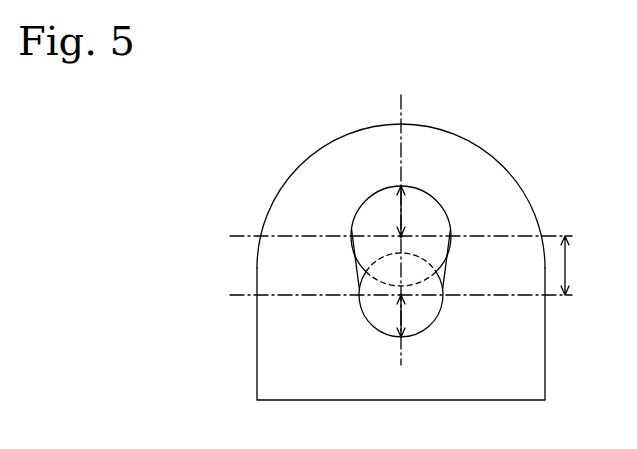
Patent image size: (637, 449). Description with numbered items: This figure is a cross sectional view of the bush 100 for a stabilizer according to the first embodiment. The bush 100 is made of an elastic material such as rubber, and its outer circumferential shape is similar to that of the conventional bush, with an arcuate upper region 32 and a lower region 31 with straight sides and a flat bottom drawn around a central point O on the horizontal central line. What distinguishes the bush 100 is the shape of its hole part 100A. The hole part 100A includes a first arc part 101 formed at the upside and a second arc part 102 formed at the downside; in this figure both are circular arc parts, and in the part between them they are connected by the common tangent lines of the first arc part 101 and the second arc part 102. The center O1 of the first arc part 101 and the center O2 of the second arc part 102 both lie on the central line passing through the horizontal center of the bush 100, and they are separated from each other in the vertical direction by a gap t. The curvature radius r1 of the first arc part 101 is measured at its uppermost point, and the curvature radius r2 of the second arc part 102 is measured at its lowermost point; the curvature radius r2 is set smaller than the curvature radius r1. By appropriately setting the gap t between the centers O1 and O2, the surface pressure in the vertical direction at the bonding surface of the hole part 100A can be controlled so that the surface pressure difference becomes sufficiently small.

The bush 100 is at (400, 245).
The hole part 100A is at (447, 214).
The first arc part 101 is at (428, 189).
The second arc part 102 is at (439, 317).
The straight portion 31 is at (270, 366).
The arcuate portion 32 is at (313, 196).
The center of arc O is at (401, 253).
The center of the first arc part O1 is at (407, 230).
The center of the second arc part O2 is at (397, 303).
The curvature radius of the first arc part r1 is at (396, 205).
The curvature radius of the second arc part r2 is at (410, 334).
The gap between the centers t is at (571, 265).